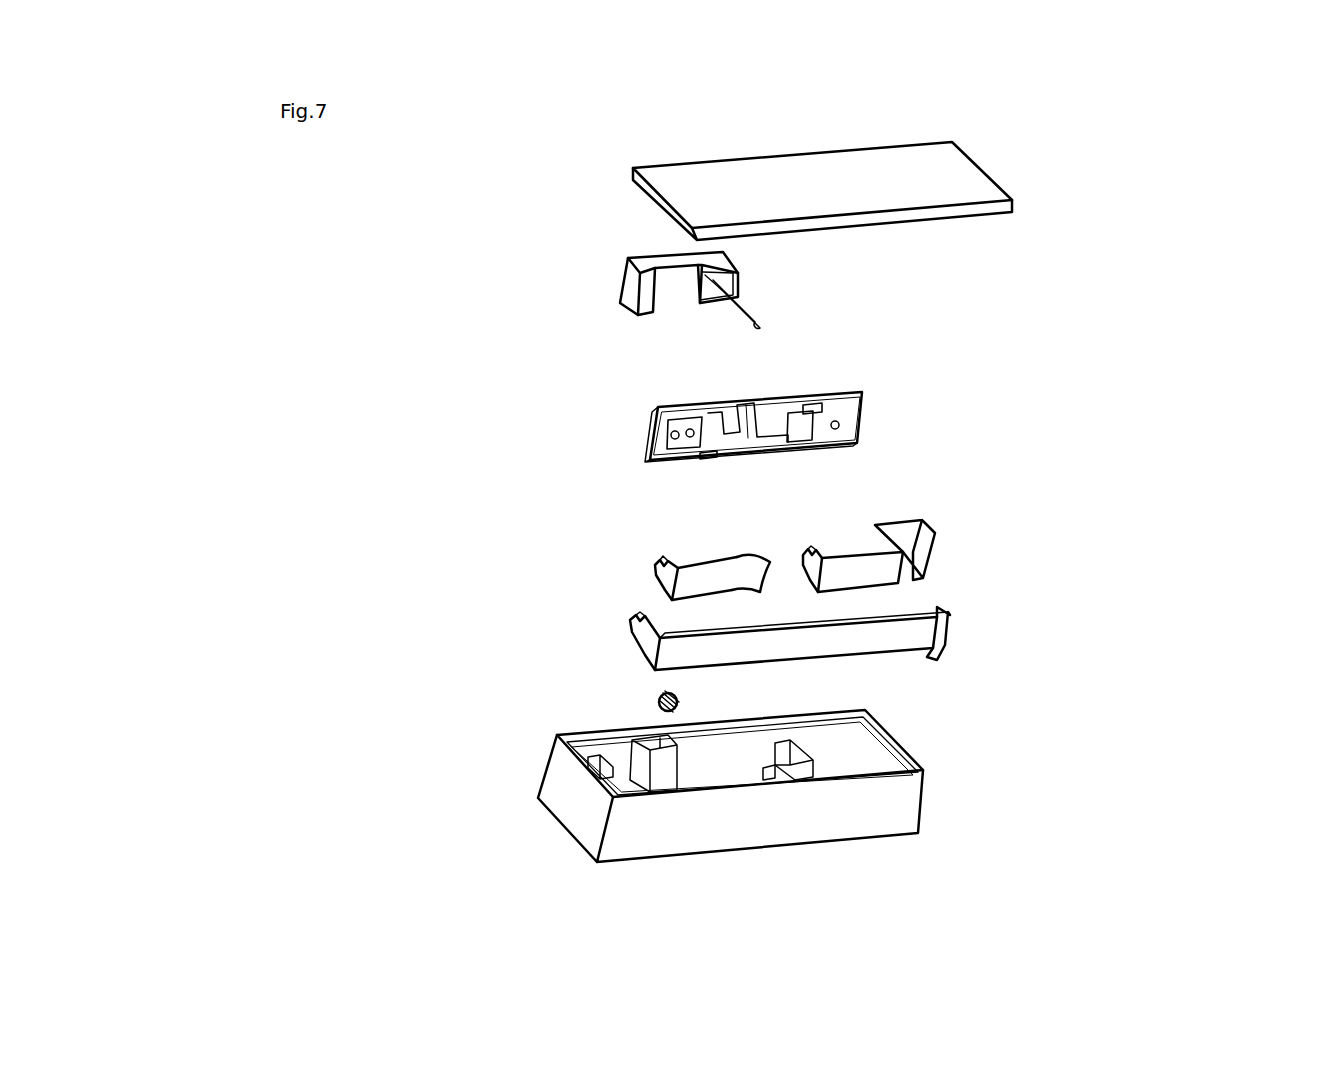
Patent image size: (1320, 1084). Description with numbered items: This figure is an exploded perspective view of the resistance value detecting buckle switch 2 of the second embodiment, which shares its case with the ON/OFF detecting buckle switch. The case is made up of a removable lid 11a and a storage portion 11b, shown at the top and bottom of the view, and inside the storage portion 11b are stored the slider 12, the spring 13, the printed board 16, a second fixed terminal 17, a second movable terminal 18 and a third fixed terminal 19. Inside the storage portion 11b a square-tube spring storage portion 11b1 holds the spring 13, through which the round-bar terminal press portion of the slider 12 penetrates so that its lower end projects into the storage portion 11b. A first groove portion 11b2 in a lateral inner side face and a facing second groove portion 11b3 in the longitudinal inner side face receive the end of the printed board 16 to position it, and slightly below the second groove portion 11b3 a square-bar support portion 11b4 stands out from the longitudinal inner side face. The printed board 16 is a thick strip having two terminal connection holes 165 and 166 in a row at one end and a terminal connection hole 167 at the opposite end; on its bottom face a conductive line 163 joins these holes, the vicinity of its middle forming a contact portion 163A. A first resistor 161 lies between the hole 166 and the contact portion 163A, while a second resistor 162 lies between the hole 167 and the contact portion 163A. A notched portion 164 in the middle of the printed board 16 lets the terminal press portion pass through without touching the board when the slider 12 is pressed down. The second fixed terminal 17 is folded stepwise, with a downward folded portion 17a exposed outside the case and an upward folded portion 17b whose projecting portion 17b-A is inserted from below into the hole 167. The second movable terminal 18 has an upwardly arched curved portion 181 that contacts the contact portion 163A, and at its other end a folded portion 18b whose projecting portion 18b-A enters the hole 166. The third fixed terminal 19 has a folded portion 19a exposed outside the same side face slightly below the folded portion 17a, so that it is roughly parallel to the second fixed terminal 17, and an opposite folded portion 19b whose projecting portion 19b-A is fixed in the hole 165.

The resistance value detecting buckle switch 2 is at (1233, 262).
The lid 11a is at (1012, 202).
The storage portion 11b is at (730, 786).
The spring storage portion 11b1 is at (676, 748).
The first groove portion 11b2 is at (565, 758).
The second groove portion 11b3 is at (810, 785).
The support portion 11b4 is at (778, 790).
The slider 12 is at (628, 270).
The spring 13 is at (680, 700).
The printed board 16 is at (748, 379).
The first resistor 161 is at (645, 456).
The second resistor 162 is at (814, 404).
The line 163 is at (866, 401).
The contact portion 163A is at (768, 427).
The notched portion 164 is at (740, 404).
The terminal connection hole 165 is at (647, 433).
The terminal connection hole 166 is at (686, 430).
The terminal connection hole 167 is at (858, 425).
The second fixed terminal 17 is at (881, 560).
The folded portion 17a is at (925, 572).
The folded portion 17b is at (803, 590).
The projecting portion 17b-A is at (812, 550).
The second movable terminal 18 is at (674, 556).
The curved portion 181 is at (757, 557).
The folded portion 18b is at (655, 578).
The projecting portion 18b-A is at (607, 538).
The third fixed terminal 19 is at (770, 666).
The folded portion 19a is at (940, 660).
The folded portion 19b is at (630, 648).
The projecting portion 19b-A is at (630, 624).